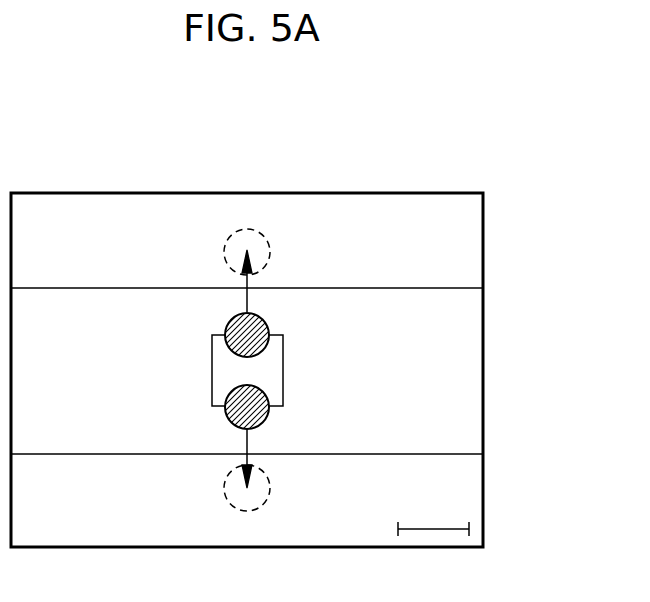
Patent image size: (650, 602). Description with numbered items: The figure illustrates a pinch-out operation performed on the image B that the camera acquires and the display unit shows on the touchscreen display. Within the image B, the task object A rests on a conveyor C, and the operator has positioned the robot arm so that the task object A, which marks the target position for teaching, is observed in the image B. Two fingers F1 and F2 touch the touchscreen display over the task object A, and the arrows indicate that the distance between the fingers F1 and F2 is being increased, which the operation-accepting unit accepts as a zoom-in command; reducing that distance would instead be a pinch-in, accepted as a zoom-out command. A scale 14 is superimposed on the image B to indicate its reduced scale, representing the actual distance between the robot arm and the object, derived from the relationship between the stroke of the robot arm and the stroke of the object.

The task object A is at (212, 372).
The image B is at (484, 243).
The conveyor C is at (360, 288).
The finger F1 is at (268, 326).
The finger F2 is at (269, 418).
The scale 14 is at (420, 522).